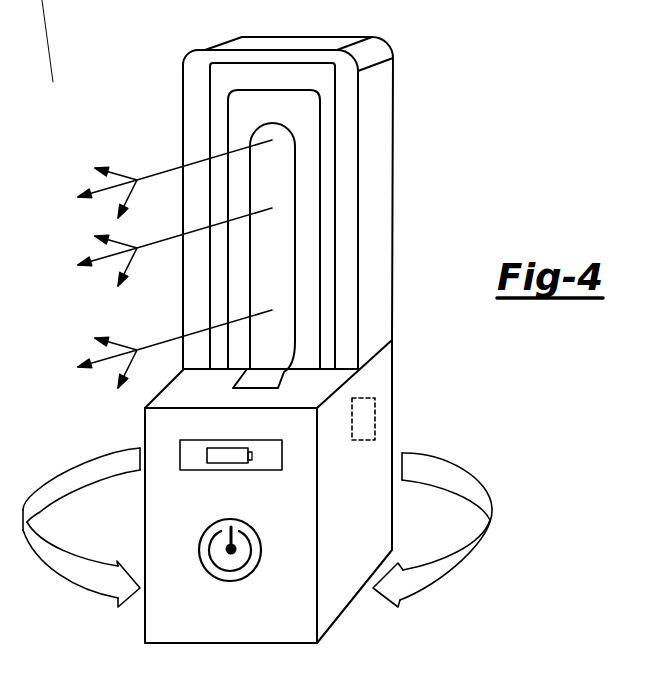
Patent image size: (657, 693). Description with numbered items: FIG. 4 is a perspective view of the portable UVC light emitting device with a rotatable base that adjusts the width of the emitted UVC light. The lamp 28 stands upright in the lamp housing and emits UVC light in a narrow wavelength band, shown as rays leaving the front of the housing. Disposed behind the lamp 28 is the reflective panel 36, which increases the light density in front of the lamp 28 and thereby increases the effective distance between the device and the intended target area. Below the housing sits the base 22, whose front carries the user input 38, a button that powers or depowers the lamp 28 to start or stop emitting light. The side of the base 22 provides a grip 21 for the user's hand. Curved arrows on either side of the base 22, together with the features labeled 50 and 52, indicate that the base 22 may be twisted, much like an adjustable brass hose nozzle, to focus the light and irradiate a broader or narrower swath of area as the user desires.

The reflective panel 36 is at (360, 145).
The lamp 28 is at (296, 252).
The user input 38 is at (296, 345).
The grip 21 is at (362, 508).
The base 22 is at (145, 527).
The rotation direction arrow 52 is at (438, 478).
The sensor 50 is at (375, 410).